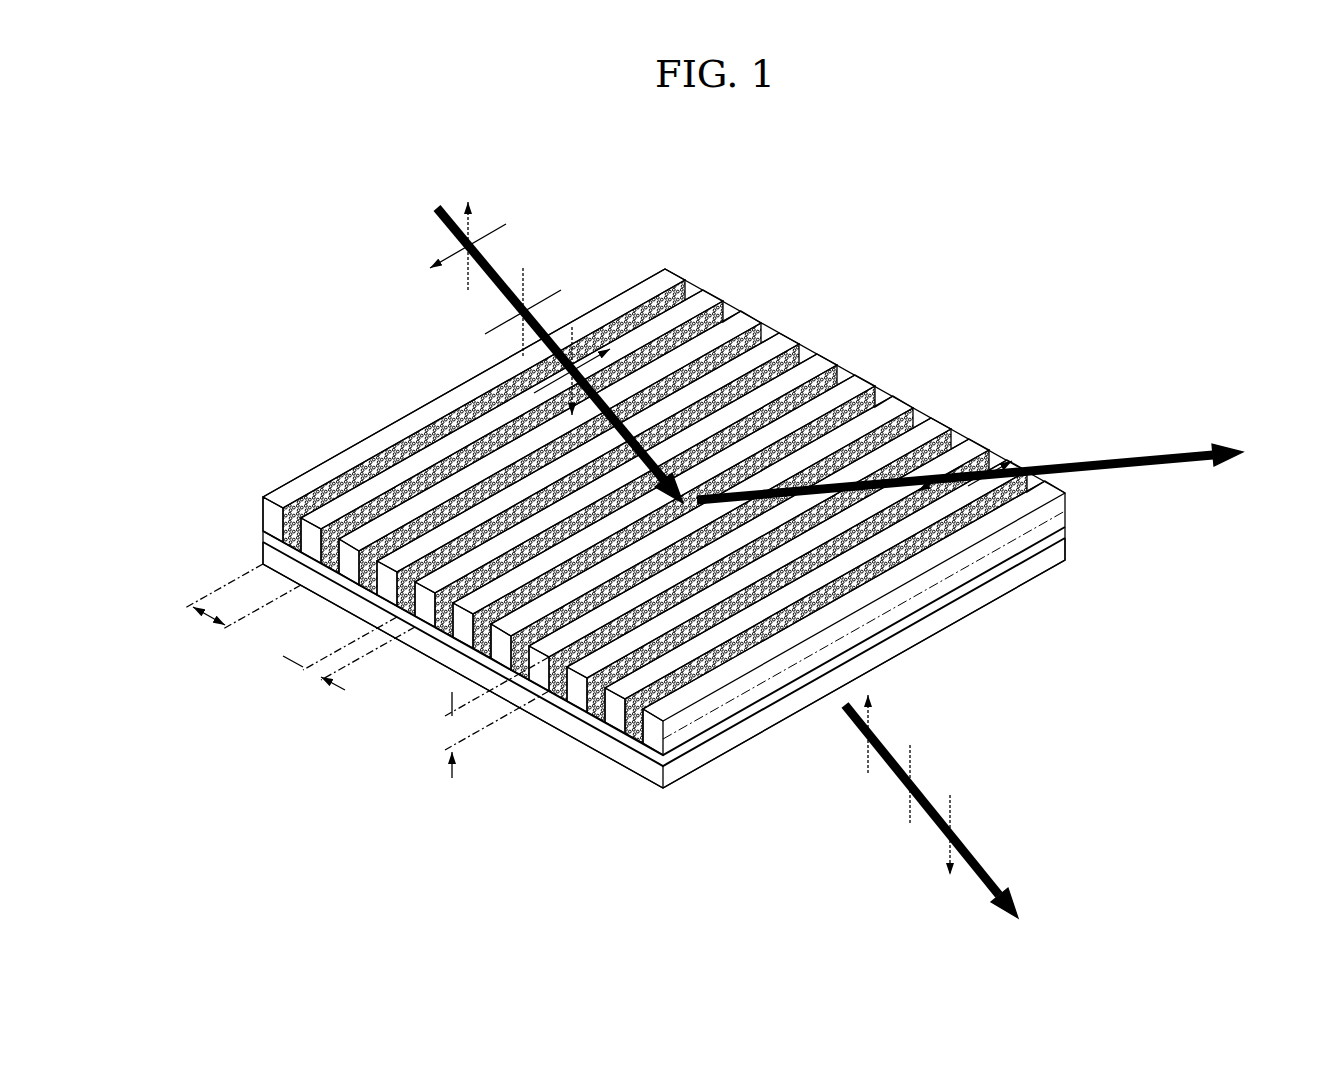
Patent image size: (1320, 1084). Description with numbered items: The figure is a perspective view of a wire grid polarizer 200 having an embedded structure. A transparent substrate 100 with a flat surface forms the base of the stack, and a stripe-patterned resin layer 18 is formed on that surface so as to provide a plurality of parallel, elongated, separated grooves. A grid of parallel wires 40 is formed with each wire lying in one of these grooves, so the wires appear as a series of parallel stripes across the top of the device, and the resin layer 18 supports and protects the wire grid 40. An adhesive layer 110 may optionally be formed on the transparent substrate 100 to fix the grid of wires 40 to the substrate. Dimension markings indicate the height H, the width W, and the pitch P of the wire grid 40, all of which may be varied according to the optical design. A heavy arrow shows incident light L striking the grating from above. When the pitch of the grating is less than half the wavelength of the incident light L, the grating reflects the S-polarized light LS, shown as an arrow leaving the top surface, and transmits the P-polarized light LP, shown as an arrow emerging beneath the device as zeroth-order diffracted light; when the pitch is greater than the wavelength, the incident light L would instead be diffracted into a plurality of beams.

The wire grid polarizer 200 is at (664, 540).
The wire grid 40 is at (588, 723).
The stripe-patterned resin layer 18 is at (617, 718).
The transparent substrate 100 is at (643, 770).
The adhesive layer 110 is at (658, 768).
The incident light L is at (447, 228).
The S-polarized light LS is at (1195, 442).
The P-polarized light LP is at (985, 868).
The pitch P is at (243, 603).
The width W is at (349, 658).
The height H is at (488, 717).